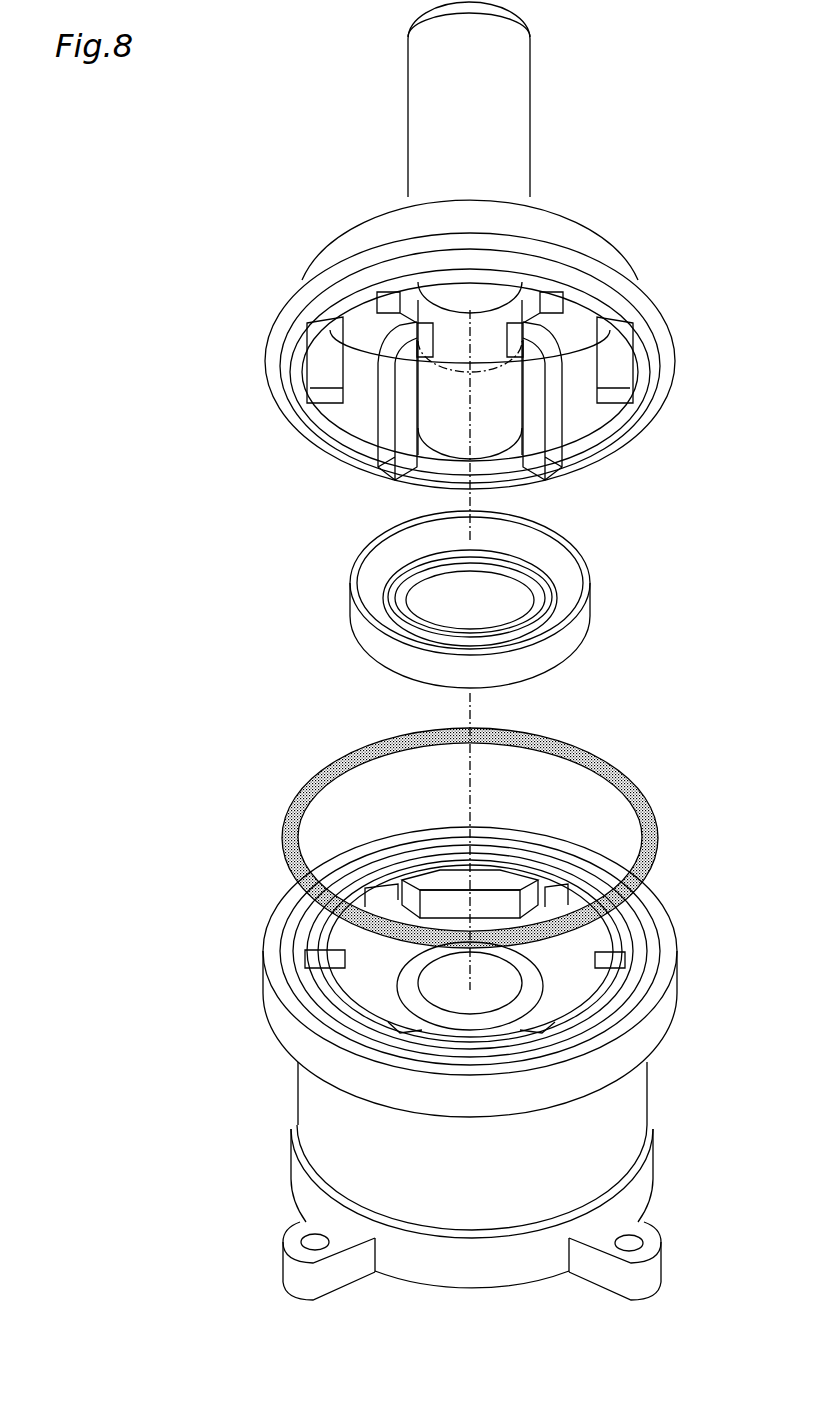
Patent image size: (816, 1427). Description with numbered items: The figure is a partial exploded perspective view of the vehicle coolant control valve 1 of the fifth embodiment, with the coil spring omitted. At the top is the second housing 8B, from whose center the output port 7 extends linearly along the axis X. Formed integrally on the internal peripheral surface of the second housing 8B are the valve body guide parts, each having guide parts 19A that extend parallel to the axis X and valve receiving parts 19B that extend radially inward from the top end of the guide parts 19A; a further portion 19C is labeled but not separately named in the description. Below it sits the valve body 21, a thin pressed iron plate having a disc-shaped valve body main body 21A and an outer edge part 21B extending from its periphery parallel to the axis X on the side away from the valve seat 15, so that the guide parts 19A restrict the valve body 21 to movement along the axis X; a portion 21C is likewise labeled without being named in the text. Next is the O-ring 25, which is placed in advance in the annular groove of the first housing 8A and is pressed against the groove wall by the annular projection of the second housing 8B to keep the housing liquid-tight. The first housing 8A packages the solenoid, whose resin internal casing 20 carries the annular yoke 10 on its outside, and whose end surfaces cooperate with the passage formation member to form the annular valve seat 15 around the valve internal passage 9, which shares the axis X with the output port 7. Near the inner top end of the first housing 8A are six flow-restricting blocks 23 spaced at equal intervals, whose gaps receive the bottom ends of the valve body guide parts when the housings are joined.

The vehicle coolant control valve 1 is at (200, 483).
The output port 7 is at (502, 105).
The first housing 8A is at (290, 1240).
The second housing 8B is at (357, 231).
The valve internal passage 9 is at (472, 1048).
The annular yoke 10 is at (365, 960).
The annular valve seat 15 is at (520, 1012).
The guide parts 19A is at (592, 365).
The valve receiving parts 19B is at (516, 355).
The engaging legs 19C is at (322, 395).
The internal casing 20 is at (368, 992).
The valve body 21 is at (596, 595).
The valve body main body 21A is at (485, 623).
The outer edge part 21B is at (390, 637).
The seal lip 21C is at (540, 570).
The flow-restricting block 23 is at (570, 898).
The O-ring 25 is at (632, 815).